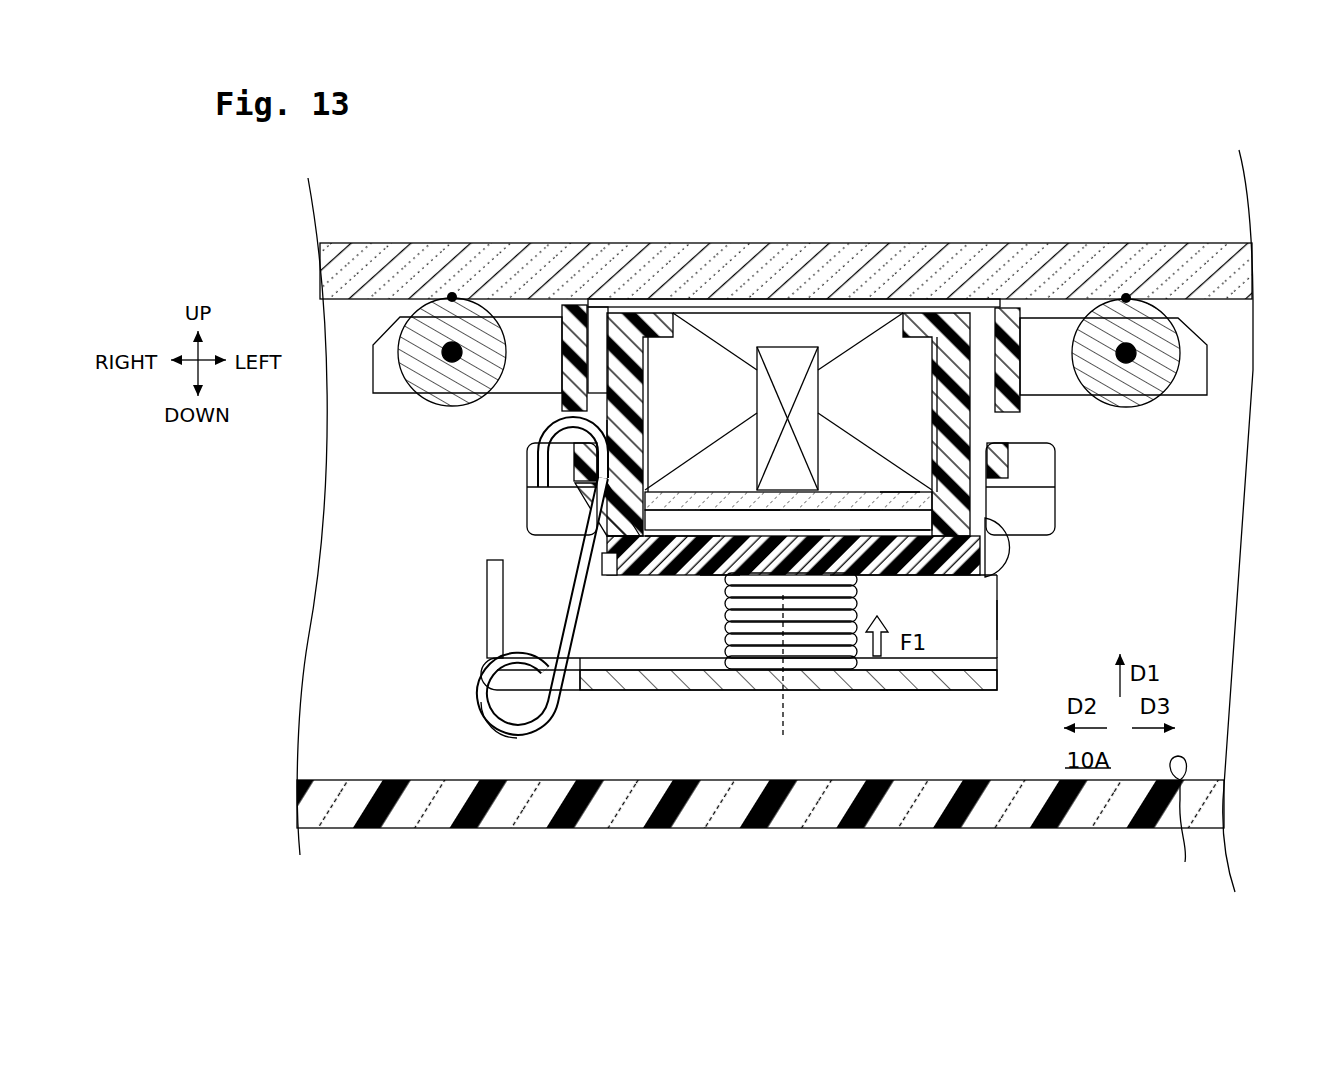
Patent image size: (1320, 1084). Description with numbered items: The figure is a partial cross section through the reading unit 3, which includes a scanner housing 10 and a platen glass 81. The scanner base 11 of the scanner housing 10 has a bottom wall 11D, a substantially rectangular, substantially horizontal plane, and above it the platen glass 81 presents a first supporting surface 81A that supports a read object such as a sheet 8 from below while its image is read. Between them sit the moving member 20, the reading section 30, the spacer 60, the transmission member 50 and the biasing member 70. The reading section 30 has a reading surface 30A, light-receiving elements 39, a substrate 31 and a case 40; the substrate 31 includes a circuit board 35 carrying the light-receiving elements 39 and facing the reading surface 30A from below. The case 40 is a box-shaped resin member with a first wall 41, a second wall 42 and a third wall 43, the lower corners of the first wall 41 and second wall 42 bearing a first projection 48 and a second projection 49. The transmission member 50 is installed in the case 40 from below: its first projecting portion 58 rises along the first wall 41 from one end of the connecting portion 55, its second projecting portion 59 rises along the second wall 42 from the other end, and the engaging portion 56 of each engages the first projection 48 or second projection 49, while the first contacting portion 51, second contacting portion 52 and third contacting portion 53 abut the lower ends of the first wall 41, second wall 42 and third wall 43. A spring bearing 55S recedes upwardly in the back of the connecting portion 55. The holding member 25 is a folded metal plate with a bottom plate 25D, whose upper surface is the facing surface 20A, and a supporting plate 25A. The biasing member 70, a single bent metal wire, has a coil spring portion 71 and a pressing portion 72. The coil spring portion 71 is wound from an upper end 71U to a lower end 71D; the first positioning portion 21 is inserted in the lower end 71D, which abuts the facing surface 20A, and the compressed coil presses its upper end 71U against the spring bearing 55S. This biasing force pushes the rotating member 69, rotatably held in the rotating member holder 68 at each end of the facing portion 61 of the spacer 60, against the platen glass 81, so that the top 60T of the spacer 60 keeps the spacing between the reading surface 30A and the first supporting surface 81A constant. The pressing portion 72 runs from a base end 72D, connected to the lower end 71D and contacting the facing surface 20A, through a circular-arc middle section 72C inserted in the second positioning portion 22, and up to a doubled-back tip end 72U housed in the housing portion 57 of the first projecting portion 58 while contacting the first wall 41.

The reading unit 3 is at (845, 666).
The sheet 8 is at (296, 585).
The scanner housing 10 is at (760, 841).
The scanner base 11 is at (1140, 832).
The bottom wall 11D is at (1195, 825).
The moving member 20 is at (776, 708).
The facing surface 20A is at (980, 662).
The first positioning portion 21 is at (787, 678).
The second positioning portion 22 is at (520, 686).
The holding member 25 is at (973, 674).
The supporting plate 25A is at (955, 628).
The bottom plate 25D is at (905, 673).
The reading section 30 is at (788, 388).
The reading surface 30A is at (778, 312).
The substrate 31 is at (882, 518).
The circuit board 35 is at (893, 492).
The light-receiving elements 39 is at (803, 378).
The case 40 is at (604, 310).
The first wall 41 is at (665, 370).
The second wall 42 is at (930, 370).
The third wall 43 is at (740, 520).
The first projection 48 is at (560, 500).
The second projection 49 is at (1035, 500).
The transmission member 50 is at (1078, 552).
The first contacting portion 51 is at (585, 500).
The second contacting portion 52 is at (1015, 555).
The third contacting portion 53 is at (860, 530).
The connecting portion 55 is at (815, 530).
The spring bearing 55S is at (722, 638).
The engaging portion 56 is at (570, 497).
The housing portion 57 is at (574, 458).
The first projecting portion 58 is at (524, 440).
The second projecting portion 59 is at (1058, 443).
The spacer 60 is at (1012, 316).
The top of the spacer 60T is at (452, 297).
The facing portion 61 is at (572, 305).
The rotating member holder 68 is at (378, 360).
The rotating member 69 is at (440, 365).
The biasing member 70 is at (676, 600).
The coil spring portion 71 is at (741, 623).
The upper end of the coil spring portion 71U is at (722, 578).
The lower end of the coil spring portion 71D is at (858, 672).
The pressing portion 72 is at (564, 595).
The middle section 72C is at (492, 745).
The base end 72D is at (728, 665).
The tip end 72U is at (630, 445).
The platen glass 81 is at (1177, 240).
The first supporting surface 81A is at (1246, 243).